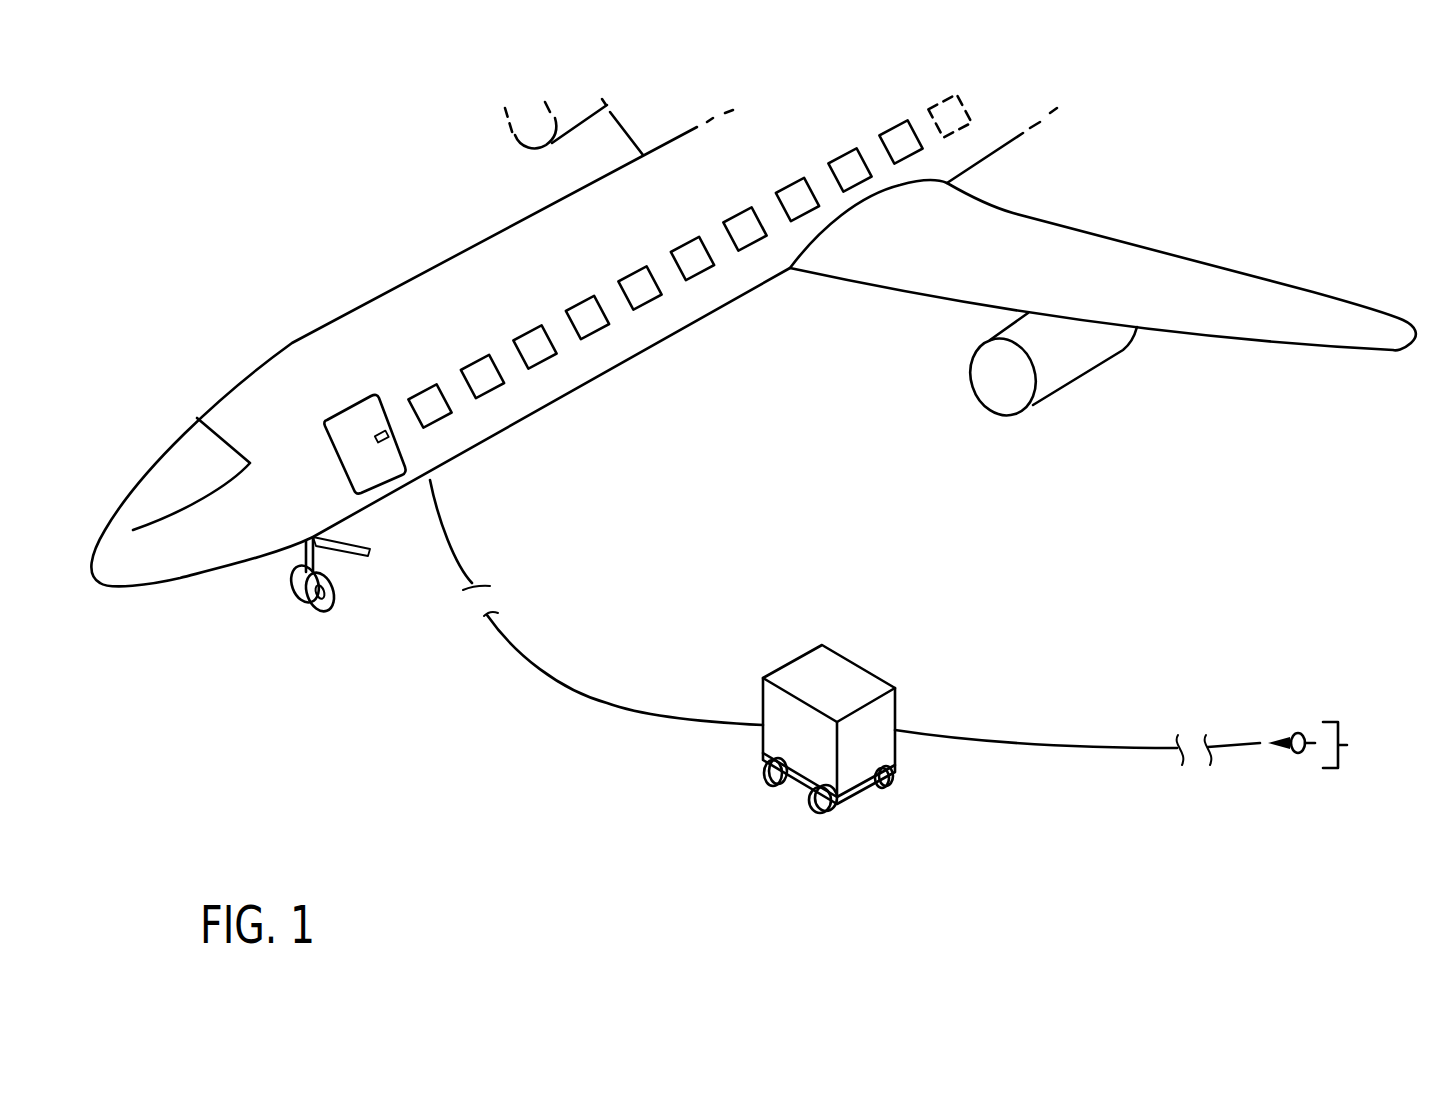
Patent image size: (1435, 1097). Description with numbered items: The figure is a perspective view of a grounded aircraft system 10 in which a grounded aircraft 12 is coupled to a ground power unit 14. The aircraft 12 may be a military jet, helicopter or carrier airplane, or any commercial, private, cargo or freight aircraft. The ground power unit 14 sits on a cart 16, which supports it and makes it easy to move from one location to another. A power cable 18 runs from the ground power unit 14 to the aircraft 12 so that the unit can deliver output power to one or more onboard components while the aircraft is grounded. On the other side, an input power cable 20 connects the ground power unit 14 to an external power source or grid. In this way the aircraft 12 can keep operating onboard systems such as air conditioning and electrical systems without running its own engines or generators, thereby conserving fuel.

The grounded aircraft system 10 is at (291, 186).
The grounded aircraft 12 is at (292, 343).
The ground power unit 14 is at (862, 667).
The cart 16 is at (757, 758).
The power cable 18 is at (605, 702).
The input power cable 20 is at (1077, 750).